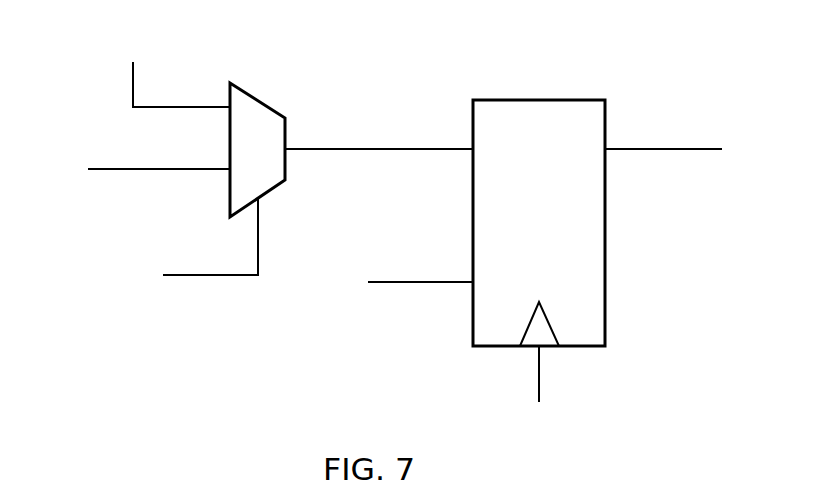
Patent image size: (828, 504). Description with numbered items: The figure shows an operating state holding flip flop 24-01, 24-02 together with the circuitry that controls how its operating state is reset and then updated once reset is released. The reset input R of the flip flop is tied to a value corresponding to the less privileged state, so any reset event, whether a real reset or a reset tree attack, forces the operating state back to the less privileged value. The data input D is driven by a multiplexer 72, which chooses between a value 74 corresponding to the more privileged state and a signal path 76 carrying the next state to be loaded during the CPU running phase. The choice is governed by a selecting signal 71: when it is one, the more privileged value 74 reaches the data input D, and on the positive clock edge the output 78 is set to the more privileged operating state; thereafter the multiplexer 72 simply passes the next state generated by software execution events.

The multiplexer 72 is at (255, 98).
The signal path 76 is at (133, 78).
The value corresponding to the more privileged state 74 is at (142, 172).
The selecting signal 71 is at (218, 277).
The operating state holding flip flop 24-01 is at (504, 242).
The operating state holding flip flop 24-02 is at (562, 80).
The output 78 is at (662, 152).